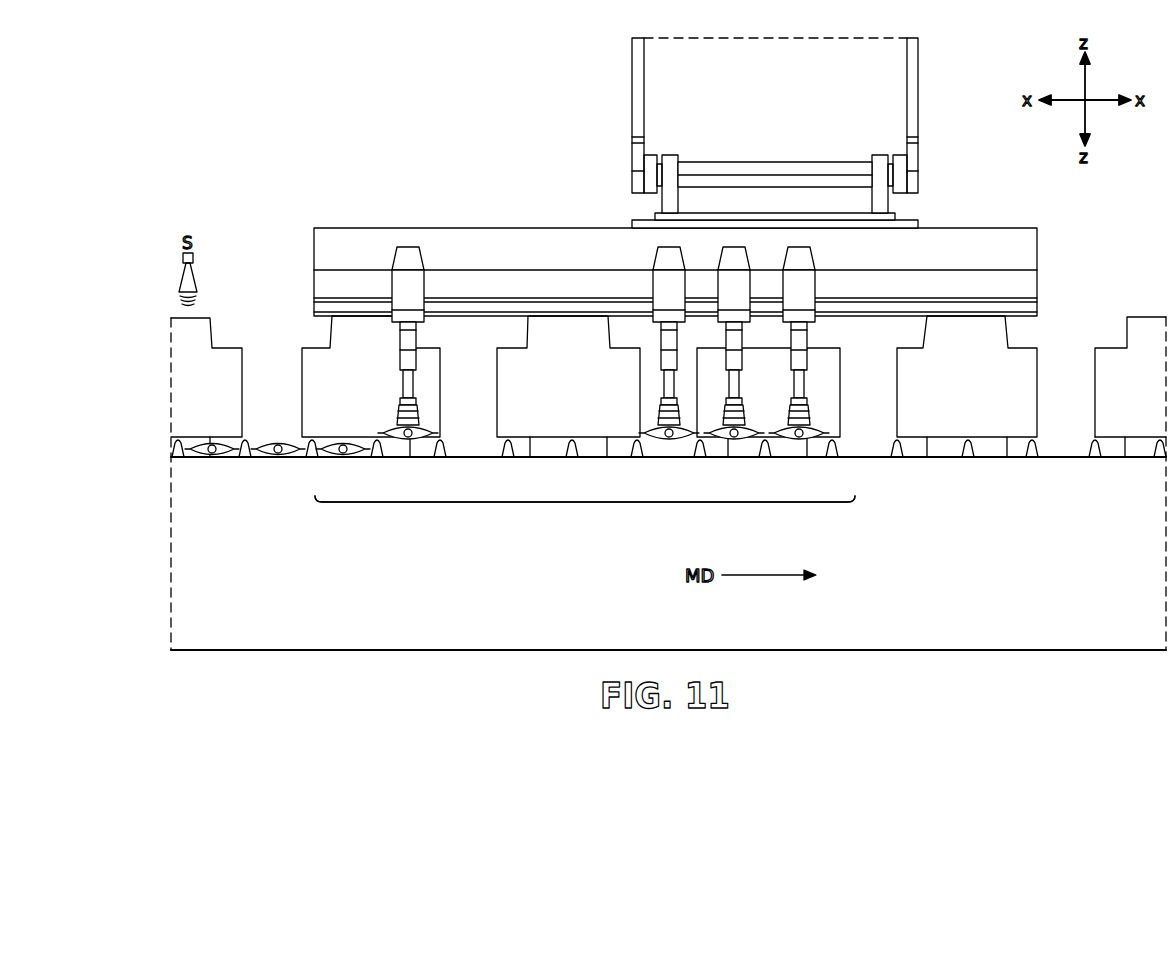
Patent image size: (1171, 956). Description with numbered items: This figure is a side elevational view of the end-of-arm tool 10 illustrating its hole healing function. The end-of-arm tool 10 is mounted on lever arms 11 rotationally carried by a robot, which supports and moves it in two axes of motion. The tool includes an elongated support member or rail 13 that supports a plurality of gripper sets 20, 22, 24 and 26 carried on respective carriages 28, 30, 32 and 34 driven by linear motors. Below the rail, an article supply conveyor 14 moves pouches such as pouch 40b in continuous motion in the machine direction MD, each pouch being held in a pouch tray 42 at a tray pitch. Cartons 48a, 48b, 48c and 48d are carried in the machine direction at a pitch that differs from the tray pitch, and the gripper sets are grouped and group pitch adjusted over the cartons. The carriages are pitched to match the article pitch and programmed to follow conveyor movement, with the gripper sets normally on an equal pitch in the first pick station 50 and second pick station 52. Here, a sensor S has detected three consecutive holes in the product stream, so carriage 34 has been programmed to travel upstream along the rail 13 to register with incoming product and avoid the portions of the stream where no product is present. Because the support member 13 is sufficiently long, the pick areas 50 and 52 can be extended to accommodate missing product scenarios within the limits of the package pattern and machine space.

The end-of-arm tool 10 is at (276, 197).
The lever arm 11 is at (632, 143).
The support member or rail 13 is at (993, 227).
The first article supply conveyor 14 is at (1114, 450).
The gripper set 20 is at (810, 373).
The gripper set 22 is at (768, 387).
The gripper set 24 is at (659, 403).
The gripper set 26 is at (395, 423).
The carriage 28 is at (816, 281).
The carriage 30 is at (751, 281).
The carriage 32 is at (686, 281).
The carriage 34 is at (392, 281).
The pouch 40b is at (207, 446).
The pouch tray 42 is at (978, 452).
The carton 48a is at (1031, 348).
The carton 48b is at (841, 424).
The carton 48c is at (496, 362).
The carton 48d is at (301, 359).
The first pick station 50 is at (597, 504).
The second pick station 52 is at (585, 499).